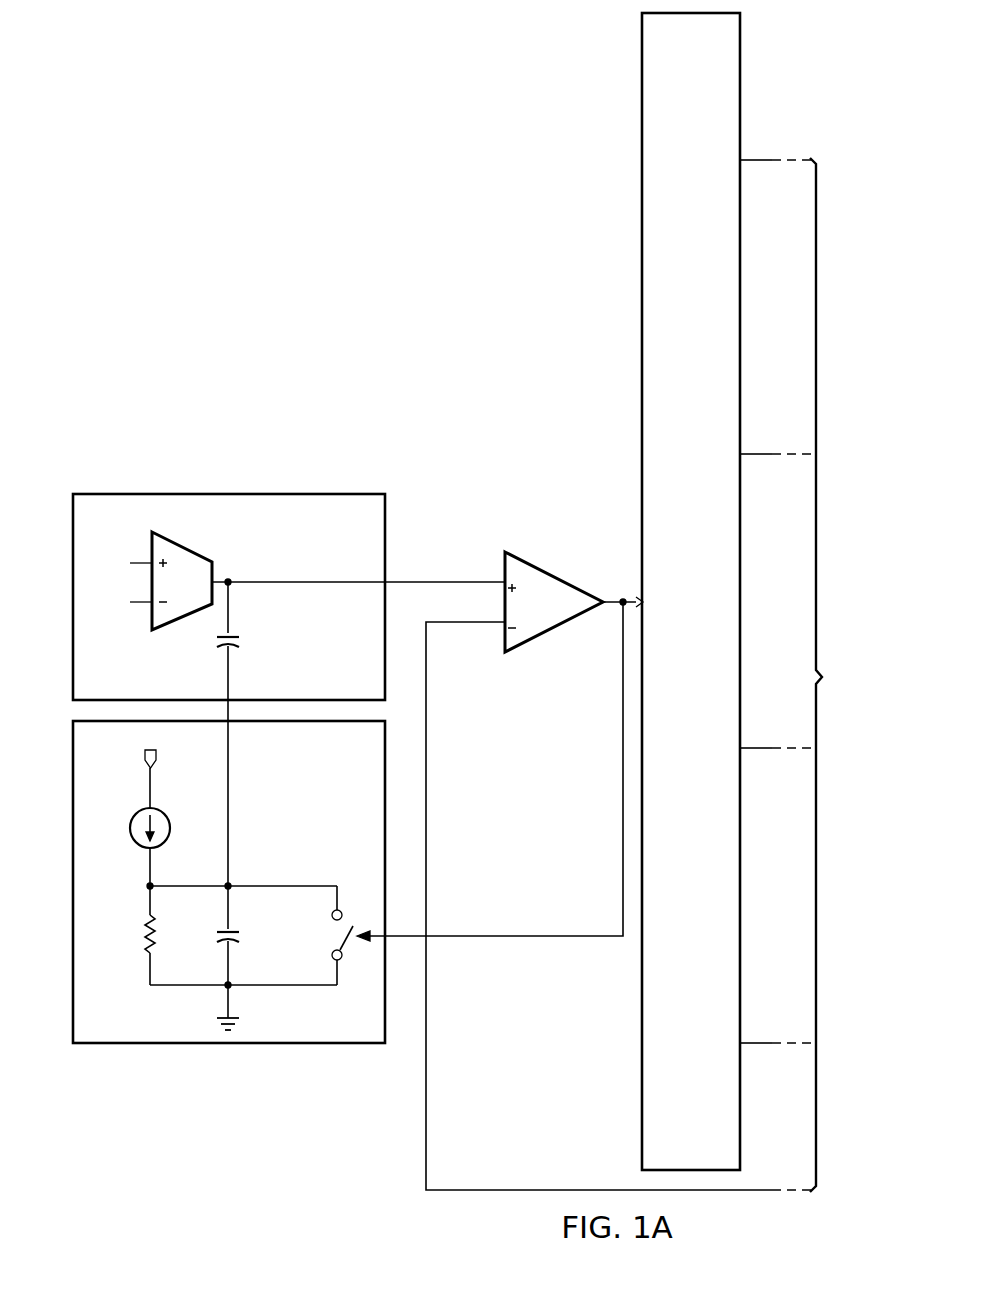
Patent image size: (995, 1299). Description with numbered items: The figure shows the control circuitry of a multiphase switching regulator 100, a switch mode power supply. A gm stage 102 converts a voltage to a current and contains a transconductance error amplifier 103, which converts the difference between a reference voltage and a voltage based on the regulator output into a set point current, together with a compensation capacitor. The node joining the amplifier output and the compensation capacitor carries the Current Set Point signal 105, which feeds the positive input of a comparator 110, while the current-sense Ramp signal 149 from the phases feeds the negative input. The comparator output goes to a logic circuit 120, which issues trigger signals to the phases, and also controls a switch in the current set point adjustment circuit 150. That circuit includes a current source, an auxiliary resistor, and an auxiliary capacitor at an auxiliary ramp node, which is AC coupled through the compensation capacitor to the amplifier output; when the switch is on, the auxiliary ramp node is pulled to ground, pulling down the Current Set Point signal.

The multiphase switching regulator 100 is at (327, 241).
The gm stage 102 is at (191, 495).
The transconductance error amplifier 103 is at (181, 548).
The Current Set Point signal 105 is at (306, 580).
The comparator 110 is at (553, 578).
The logic circuit 120 is at (709, 630).
The current-sense Ramp signal 149 is at (427, 778).
The current set point adjustment circuit 150 is at (326, 812).